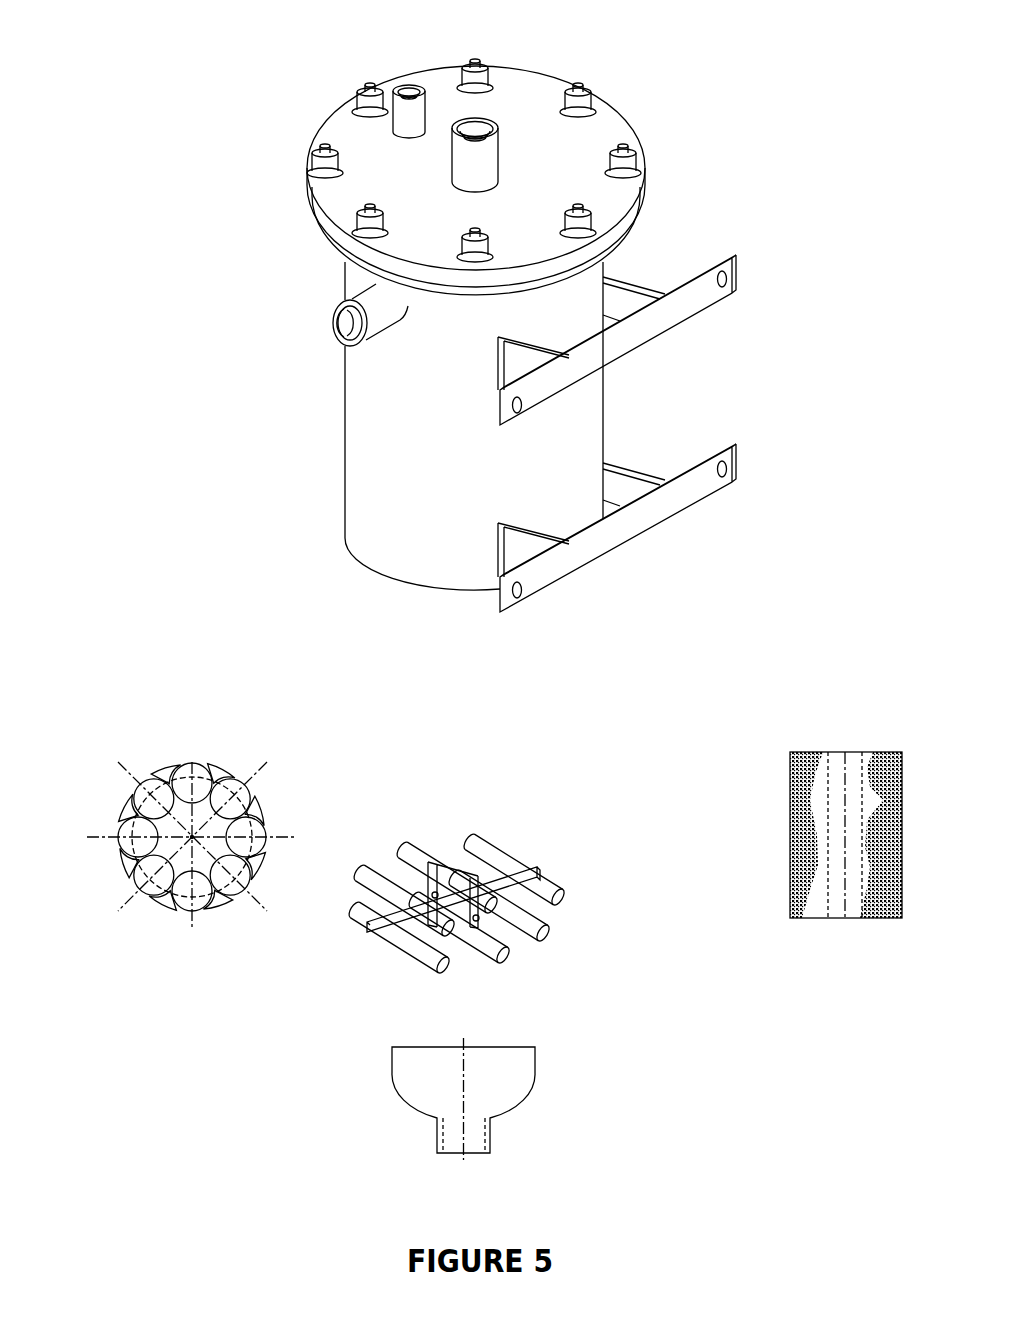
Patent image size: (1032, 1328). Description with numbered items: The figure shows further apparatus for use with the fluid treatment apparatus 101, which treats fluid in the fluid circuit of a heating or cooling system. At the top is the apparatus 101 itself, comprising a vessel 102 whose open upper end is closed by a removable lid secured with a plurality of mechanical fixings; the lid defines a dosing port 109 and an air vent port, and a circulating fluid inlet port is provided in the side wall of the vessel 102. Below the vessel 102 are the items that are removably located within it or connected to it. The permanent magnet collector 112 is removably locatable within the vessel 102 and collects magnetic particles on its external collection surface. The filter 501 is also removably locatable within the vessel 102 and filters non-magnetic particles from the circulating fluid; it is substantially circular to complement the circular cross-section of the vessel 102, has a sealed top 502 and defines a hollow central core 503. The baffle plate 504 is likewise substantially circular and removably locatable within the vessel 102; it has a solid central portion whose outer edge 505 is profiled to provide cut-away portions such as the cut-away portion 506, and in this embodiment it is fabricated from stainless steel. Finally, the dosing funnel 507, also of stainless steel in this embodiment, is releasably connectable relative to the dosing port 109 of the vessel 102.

The fluid treatment apparatus 101 is at (228, 395).
The vessel 102 is at (573, 435).
The dosing port 109 is at (497, 122).
The permanent magnet collector 112 is at (505, 867).
The filter 501 is at (818, 870).
The sealed top 502 is at (818, 748).
The hollow central core 503 is at (840, 830).
The baffle plate 504 is at (170, 853).
The outer edge 505 is at (217, 768).
The cut-away portion 506 is at (193, 777).
The dosing funnel 507 is at (515, 1082).